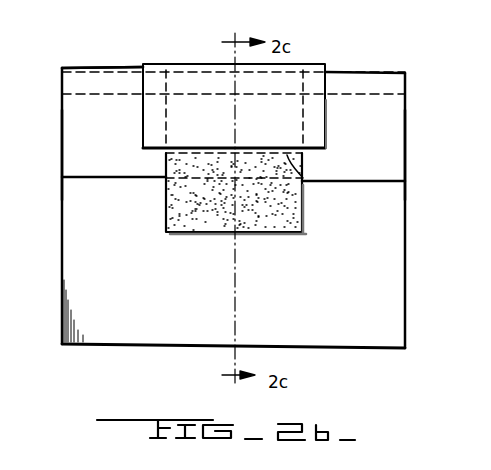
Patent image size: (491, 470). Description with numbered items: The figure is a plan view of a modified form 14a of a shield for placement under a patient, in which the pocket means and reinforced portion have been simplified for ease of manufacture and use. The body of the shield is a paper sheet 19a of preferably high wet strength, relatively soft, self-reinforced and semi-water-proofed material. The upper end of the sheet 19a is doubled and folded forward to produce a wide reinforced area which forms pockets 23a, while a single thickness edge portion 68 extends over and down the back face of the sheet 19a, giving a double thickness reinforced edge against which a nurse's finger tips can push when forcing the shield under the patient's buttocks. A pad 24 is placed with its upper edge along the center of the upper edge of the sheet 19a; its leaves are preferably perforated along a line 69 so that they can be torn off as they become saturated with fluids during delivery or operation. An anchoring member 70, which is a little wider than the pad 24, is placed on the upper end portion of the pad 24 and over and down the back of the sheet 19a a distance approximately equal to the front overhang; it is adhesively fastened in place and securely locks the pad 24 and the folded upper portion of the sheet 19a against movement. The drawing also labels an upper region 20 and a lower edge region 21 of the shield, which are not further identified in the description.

The modified form of the shield 14a is at (398, 60).
The paper sheet 19a is at (78, 211).
The top surface 20 is at (79, 69).
The bottom surface 21 is at (120, 320).
The pockets 23a is at (76, 143).
The pad 24 is at (204, 232).
The single thickness edge portion 68 is at (115, 78).
The perforation line 69 is at (305, 181).
The anchoring member 70 is at (290, 70).